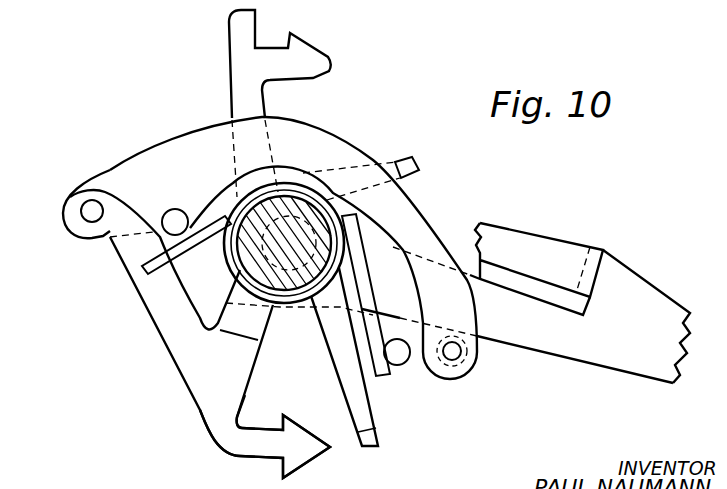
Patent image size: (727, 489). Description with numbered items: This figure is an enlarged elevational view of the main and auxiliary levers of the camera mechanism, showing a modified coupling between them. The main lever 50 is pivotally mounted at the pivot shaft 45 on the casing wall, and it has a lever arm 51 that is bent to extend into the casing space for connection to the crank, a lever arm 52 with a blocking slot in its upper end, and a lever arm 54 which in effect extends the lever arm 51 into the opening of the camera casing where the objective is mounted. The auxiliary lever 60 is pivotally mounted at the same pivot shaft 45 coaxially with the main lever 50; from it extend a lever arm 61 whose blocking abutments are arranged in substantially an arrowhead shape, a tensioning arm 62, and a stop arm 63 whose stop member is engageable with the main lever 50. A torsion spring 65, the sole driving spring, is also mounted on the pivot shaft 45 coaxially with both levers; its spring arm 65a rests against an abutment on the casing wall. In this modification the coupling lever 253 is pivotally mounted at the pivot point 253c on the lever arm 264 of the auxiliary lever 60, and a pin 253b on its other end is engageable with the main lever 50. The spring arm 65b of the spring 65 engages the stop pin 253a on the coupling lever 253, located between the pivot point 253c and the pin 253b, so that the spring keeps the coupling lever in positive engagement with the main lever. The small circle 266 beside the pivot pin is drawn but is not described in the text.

The pivot shaft 45 is at (300, 217).
The main lever 50 is at (522, 330).
The lever arm 51 is at (527, 250).
The lever arm 52 is at (232, 67).
The lever arm 54 is at (640, 305).
The auxiliary lever 60 is at (250, 322).
The lever arm 61 is at (260, 440).
The tensioning arm 62 is at (353, 383).
The stop arm 63 is at (397, 165).
The torsion spring 65 is at (240, 293).
The spring arm 65a is at (357, 282).
The spring arm 65b is at (210, 225).
The coupling lever 253 is at (197, 143).
The stop pin 253a is at (167, 212).
The pin 253b is at (452, 352).
The pivot point 253c is at (91, 210).
The lever arm 264 is at (160, 295).
The pin 266 is at (397, 352).